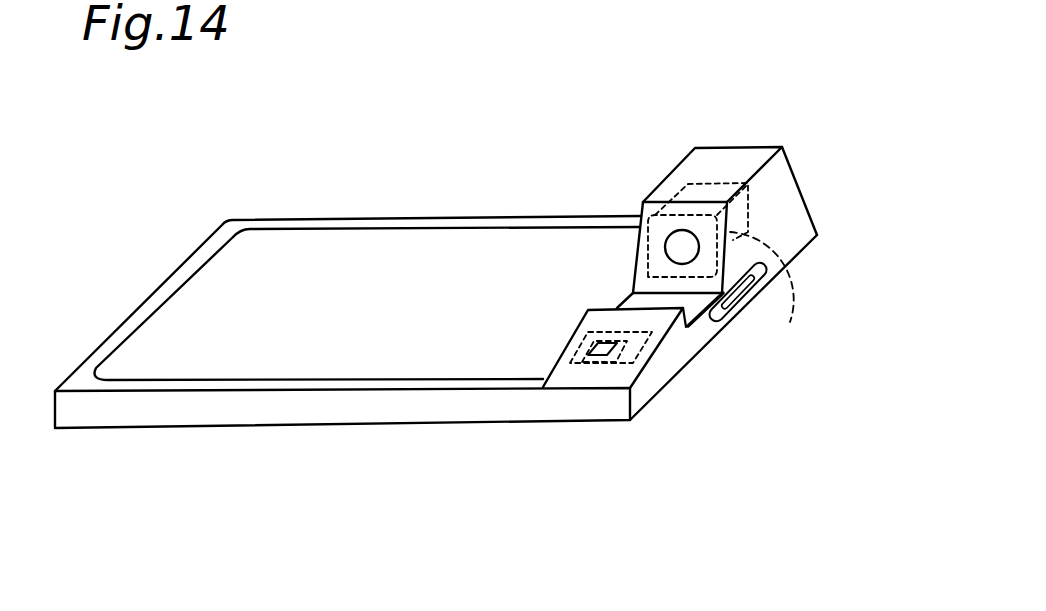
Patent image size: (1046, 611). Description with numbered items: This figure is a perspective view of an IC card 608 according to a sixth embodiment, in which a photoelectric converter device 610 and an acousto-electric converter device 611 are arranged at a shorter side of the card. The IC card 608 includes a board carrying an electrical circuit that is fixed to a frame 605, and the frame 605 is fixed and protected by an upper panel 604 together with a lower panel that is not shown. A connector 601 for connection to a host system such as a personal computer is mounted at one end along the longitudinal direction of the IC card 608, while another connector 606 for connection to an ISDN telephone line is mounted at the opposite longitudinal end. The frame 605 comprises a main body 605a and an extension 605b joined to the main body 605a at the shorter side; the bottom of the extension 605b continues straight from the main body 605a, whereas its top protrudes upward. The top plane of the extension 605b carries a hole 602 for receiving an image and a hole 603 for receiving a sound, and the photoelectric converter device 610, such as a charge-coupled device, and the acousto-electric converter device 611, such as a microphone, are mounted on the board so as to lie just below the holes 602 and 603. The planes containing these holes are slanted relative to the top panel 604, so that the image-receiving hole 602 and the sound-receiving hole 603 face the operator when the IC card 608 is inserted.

The connector 601 is at (137, 314).
The hole for receiving an image 602 is at (676, 247).
The hole for receiving a sound 603 is at (598, 355).
The panel 604 is at (385, 252).
The frame 605 is at (356, 441).
The main body 605a is at (213, 414).
The extension 605b is at (798, 203).
The connector 606 is at (719, 321).
The IC card 608 is at (298, 201).
The photoelectric converter device 610 is at (775, 292).
The acousto-electric converter device 611 is at (647, 362).